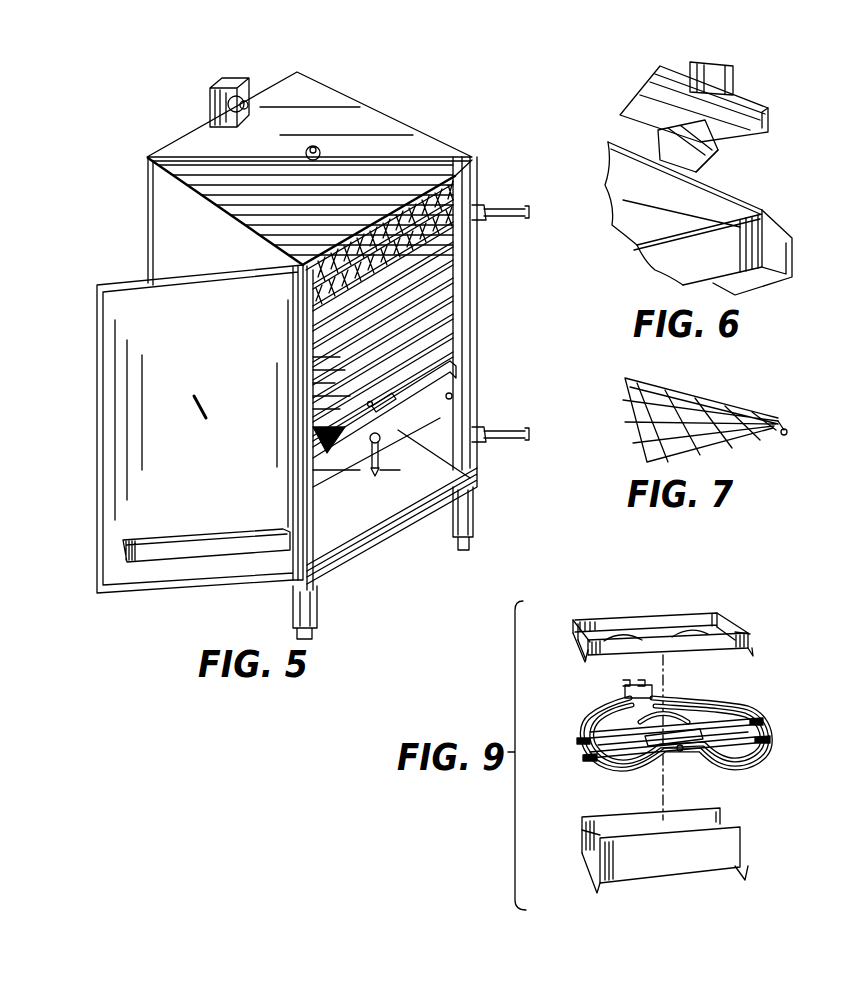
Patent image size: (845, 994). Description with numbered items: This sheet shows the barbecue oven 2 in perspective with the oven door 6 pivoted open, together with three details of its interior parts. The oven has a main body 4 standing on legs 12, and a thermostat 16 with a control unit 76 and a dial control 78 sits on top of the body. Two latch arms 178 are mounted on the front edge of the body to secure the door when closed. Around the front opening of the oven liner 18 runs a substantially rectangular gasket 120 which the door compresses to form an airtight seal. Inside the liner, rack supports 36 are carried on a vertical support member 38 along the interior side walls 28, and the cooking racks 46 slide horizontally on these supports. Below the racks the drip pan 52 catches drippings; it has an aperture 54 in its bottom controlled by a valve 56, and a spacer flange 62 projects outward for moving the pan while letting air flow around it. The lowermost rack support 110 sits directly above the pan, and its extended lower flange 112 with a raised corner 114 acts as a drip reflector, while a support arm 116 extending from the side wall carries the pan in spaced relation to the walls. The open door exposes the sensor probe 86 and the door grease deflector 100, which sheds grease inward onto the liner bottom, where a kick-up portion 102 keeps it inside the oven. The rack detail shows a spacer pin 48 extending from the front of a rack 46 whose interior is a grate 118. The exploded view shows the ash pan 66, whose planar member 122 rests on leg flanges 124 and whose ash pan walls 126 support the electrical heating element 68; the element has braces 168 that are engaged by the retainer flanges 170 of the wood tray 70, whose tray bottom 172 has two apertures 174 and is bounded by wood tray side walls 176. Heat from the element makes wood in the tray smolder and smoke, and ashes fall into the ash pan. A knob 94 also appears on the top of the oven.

In FIG. 5, the barbecue oven 2 is at (402, 97).
In FIG. 5, the main body 4 is at (432, 136).
In FIG. 5, the oven door 6 is at (128, 284).
In FIG. 5, the legs 12 is at (318, 606).
In FIG. 5, the thermostat 16 is at (204, 83).
In FIG. 5, the oven liner 18 is at (429, 460).
In FIG. 5, the interior side walls 28 is at (453, 397).
In FIG. 5, the rack supports 36 is at (455, 226).
In FIG. 5, the vertical support member 38 is at (455, 300).
In FIG. 6, the vertical support member 38 is at (735, 79).
In FIG. 5, the cooking racks 46 is at (335, 283).
In FIG. 7, the cooking racks 46 is at (700, 390).
In FIG. 7, the spacer pin 48 is at (785, 436).
In FIG. 5, the drip pan 52 is at (428, 403).
In FIG. 6, the drip pan 52 is at (766, 200).
In FIG. 5, the aperture 54 is at (367, 402).
In FIG. 5, the valve 56 is at (376, 450).
In FIG. 5, the spacer flange 62 is at (388, 402).
In FIG. 5, the ash pan 66 is at (334, 484).
In FIG. 9, the ash pan 66 is at (758, 846).
In FIG. 9, the electrical heating element 68 is at (755, 712).
In FIG. 9, the wood tray 70 is at (760, 620).
In FIG. 5, the control unit 76 is at (210, 109).
In FIG. 5, the dial control 78 is at (238, 116).
In FIG. 5, the sensor probe 86 is at (212, 411).
In FIG. 5, the vent knob 94 is at (322, 153).
In FIG. 5, the door grease deflector 100 is at (206, 540).
In FIG. 5, the kick-up portion 102 is at (366, 520).
In FIG. 5, the lowermost rack support 110 is at (455, 353).
In FIG. 6, the lowermost rack support 110 is at (765, 106).
In FIG. 5, the extended lower flange 112 is at (368, 326).
In FIG. 6, the extended lower flange 112 is at (638, 93).
In FIG. 5, the raised corner 114 is at (455, 322).
In FIG. 6, the raised corner 114 is at (707, 133).
In FIG. 6, the support arm 116 is at (715, 166).
In FIG. 7, the grate 118 is at (628, 412).
In FIG. 5, the gasket 120 is at (463, 280).
In FIG. 9, the planar member 122 is at (593, 852).
In FIG. 9, the leg flanges 124 is at (584, 875).
In FIG. 9, the ash pan walls 126 is at (720, 816).
In FIG. 9, the braces 168 is at (612, 738).
In FIG. 9, the retainer flanges 170 is at (575, 648).
In FIG. 9, the tray bottom 172 is at (593, 620).
In FIG. 9, the apertures 174 is at (683, 633).
In FIG. 9, the wood tray side walls 176 is at (742, 630).
In FIG. 5, the latch arm 178 is at (502, 210).